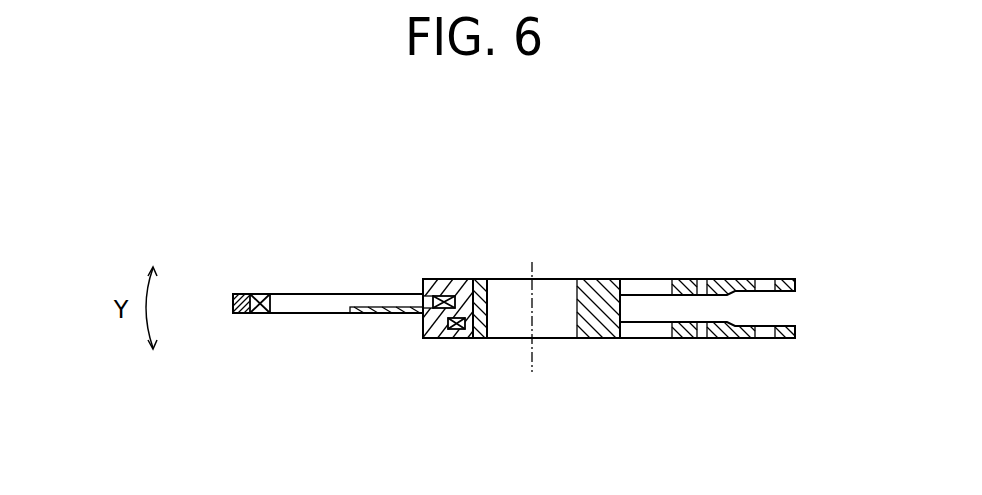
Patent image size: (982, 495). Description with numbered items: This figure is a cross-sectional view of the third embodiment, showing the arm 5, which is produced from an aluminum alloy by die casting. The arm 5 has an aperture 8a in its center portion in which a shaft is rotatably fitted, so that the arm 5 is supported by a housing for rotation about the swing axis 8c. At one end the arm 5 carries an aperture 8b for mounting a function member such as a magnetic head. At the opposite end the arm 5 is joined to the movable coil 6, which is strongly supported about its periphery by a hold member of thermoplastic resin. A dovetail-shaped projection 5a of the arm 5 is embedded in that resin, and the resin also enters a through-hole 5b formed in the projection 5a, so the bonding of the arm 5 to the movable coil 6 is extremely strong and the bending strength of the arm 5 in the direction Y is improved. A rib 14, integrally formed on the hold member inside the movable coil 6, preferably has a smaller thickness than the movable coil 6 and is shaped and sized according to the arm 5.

The arm 5 is at (727, 278).
The dovetail-shaped projection 5a is at (452, 338).
The through-hole 5b is at (478, 338).
The movable coil 6 is at (257, 314).
The aperture 8a is at (513, 295).
The aperture 8b is at (765, 338).
The swing axis 8c is at (532, 358).
The rib 14 is at (377, 314).